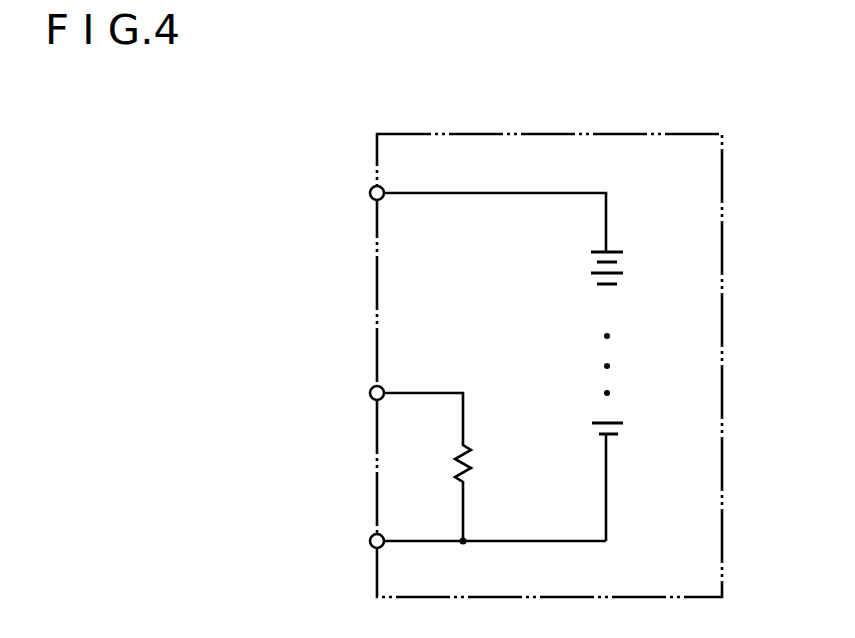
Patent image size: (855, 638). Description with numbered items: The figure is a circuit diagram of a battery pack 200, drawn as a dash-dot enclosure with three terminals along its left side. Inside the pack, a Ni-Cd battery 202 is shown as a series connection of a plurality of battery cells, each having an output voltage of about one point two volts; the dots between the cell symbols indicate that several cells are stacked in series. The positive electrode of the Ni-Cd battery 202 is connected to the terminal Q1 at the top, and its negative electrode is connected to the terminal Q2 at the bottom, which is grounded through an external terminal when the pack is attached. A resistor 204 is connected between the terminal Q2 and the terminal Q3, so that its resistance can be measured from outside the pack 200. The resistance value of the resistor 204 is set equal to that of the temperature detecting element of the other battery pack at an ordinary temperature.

The battery pack 200 is at (707, 178).
The Ni-Cd battery 202 is at (628, 240).
The resistor 204 is at (468, 450).
The terminal Q1 is at (370, 196).
The terminal Q2 is at (370, 543).
The terminal Q3 is at (370, 397).